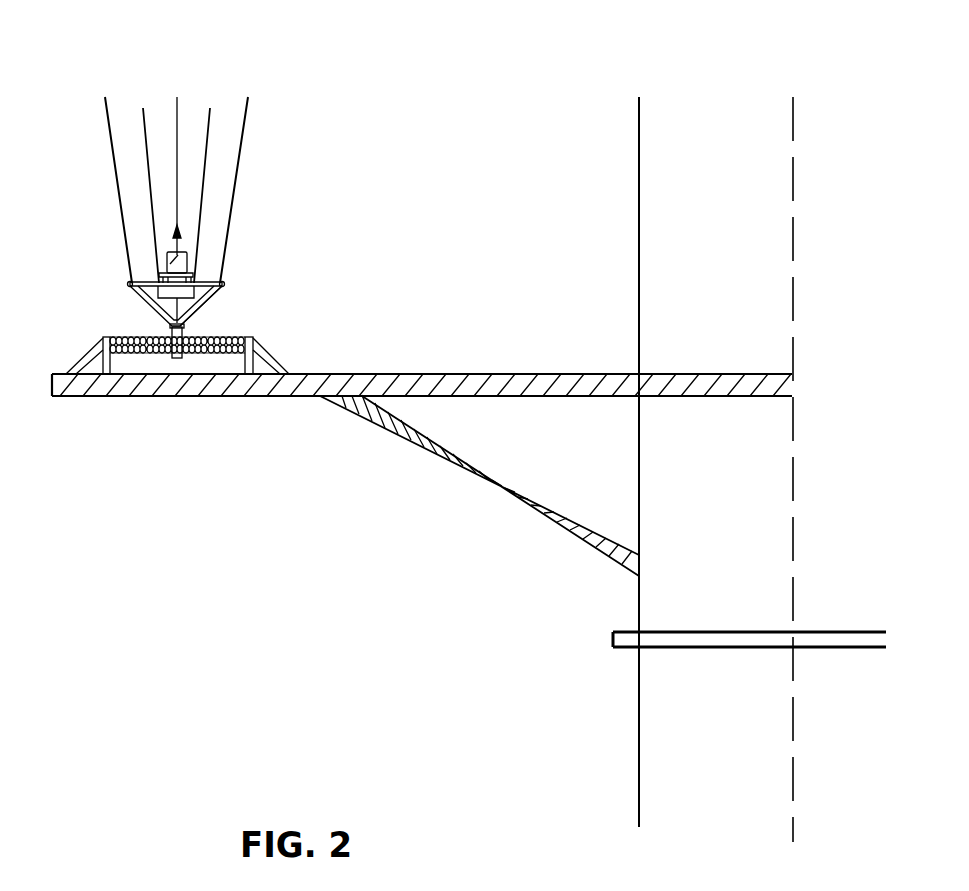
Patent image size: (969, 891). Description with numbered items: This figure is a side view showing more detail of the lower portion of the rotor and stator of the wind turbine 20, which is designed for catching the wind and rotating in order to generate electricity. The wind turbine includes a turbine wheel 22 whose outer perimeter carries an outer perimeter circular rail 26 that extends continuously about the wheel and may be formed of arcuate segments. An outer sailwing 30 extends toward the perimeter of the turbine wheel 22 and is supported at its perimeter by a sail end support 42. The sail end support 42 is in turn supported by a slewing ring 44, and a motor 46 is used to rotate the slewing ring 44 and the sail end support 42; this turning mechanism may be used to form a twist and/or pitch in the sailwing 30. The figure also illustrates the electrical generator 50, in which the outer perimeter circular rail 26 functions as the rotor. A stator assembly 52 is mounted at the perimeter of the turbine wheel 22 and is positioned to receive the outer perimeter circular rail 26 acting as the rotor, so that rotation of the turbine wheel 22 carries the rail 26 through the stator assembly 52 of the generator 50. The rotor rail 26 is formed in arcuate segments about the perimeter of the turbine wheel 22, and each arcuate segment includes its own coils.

The wind turbine 20 is at (108, 251).
The turbine wheel 22 is at (118, 197).
The outer perimeter circular rail 26 is at (183, 357).
The outer sailwing 30 is at (197, 150).
The sail end support 42 is at (197, 273).
The slewing ring 44 is at (165, 291).
The motor 46 is at (193, 291).
The electrical generator 50 is at (281, 346).
The stator assembly 52 is at (88, 337).